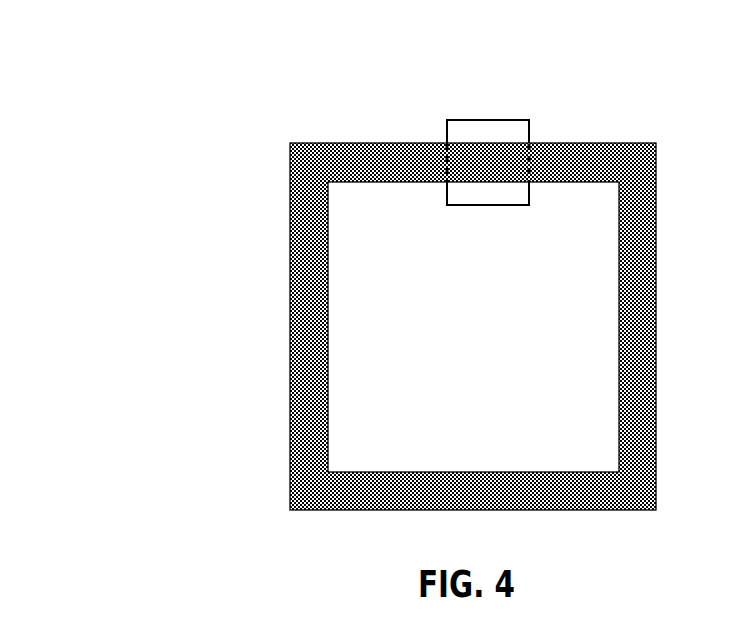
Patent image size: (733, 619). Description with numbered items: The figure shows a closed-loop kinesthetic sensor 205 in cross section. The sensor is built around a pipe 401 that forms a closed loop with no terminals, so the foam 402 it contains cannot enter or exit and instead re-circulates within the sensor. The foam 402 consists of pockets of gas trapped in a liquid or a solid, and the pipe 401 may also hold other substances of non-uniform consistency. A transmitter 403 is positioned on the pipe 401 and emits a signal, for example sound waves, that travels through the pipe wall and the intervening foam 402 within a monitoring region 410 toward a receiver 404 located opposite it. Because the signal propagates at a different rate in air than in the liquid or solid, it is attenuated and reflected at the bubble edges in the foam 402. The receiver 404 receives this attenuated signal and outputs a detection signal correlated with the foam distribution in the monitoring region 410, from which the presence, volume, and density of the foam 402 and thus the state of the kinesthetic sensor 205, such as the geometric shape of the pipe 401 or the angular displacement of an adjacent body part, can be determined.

The closed-loop kinesthetic sensor 205 is at (70, 46).
The pipe 401 is at (307, 143).
The foam 402 is at (615, 143).
The transmitter 403 is at (495, 120).
The receiver 404 is at (512, 206).
The monitoring region 410 is at (452, 150).